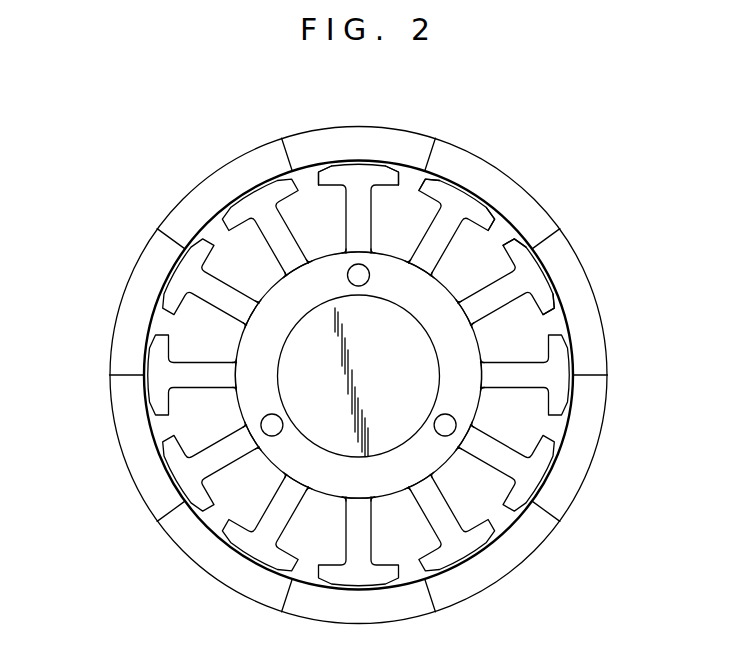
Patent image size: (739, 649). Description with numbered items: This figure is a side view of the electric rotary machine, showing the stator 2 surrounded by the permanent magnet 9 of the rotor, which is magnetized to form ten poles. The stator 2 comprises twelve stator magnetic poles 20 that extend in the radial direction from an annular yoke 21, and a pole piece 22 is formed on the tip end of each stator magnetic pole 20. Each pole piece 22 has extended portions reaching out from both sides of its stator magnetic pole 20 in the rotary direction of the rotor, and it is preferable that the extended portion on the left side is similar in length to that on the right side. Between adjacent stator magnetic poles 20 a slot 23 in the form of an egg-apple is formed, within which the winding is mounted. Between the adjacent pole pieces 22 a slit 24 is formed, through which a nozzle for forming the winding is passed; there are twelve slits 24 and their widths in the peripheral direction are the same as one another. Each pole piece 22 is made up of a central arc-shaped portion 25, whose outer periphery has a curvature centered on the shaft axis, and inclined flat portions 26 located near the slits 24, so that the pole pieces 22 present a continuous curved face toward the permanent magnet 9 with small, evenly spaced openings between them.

The stator 2 is at (405, 387).
The permanent magnet 9 is at (493, 163).
The stator magnetic pole 20 is at (232, 292).
The annular yoke 21 is at (253, 337).
The pole piece 22 is at (256, 192).
The slot 23 is at (437, 170).
The slit 24 is at (500, 230).
The central arc-shaped portion 25 is at (367, 165).
The inclined flat portion 26 is at (325, 172).